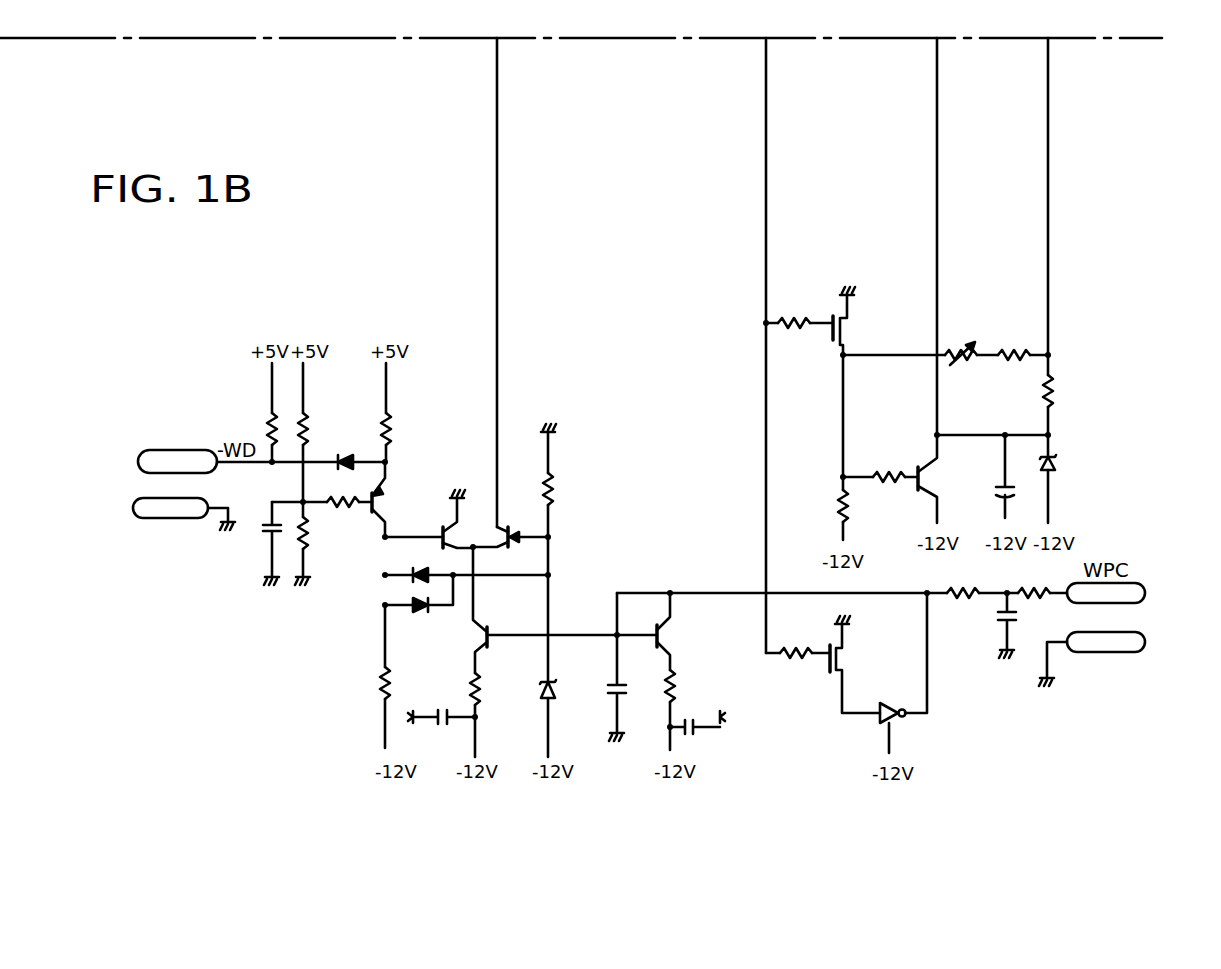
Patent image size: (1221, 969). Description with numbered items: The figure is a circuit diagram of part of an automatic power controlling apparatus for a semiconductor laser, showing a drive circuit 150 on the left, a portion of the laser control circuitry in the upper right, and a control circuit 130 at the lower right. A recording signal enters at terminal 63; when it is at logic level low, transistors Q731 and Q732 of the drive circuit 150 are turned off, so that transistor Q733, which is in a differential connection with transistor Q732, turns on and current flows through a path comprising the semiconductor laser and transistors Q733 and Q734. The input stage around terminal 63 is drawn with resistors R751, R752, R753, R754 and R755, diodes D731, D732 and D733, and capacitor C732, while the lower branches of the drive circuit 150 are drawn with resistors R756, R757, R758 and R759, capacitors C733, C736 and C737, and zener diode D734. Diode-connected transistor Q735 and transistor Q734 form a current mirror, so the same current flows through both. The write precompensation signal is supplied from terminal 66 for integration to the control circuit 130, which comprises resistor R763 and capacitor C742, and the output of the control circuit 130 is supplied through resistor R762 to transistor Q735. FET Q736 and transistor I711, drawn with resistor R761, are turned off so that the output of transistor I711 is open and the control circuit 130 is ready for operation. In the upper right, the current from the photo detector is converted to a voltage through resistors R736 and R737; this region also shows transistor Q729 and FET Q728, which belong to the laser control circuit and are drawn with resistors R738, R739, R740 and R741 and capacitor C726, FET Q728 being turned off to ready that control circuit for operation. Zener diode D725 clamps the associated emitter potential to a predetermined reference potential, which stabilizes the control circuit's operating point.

The terminal 63 is at (172, 450).
The terminal 66 is at (1145, 593).
The control circuit 130 is at (1018, 672).
The drive circuit 150 is at (507, 740).
The resistor R751 is at (252, 412).
The resistor R752 is at (329, 434).
The resistor R753 is at (414, 412).
The resistor R754 is at (323, 516).
The resistor R755 is at (333, 543).
The resistor R756 is at (351, 676).
The resistor R757 is at (442, 703).
The resistor R758 is at (529, 553).
The resistor R759 is at (700, 710).
The resistor R761 is at (798, 642).
The resistor R762 is at (968, 579).
The resistor R763 is at (1037, 579).
The resistor R736 is at (1014, 343).
The resistor R737 is at (919, 369).
The resistor R738 is at (1077, 396).
The resistor R739 is at (798, 313).
The resistor R740 is at (819, 447).
The resistor R741 is at (880, 465).
The capacitor C732 is at (245, 543).
The capacitor C733 is at (441, 731).
The capacitor C736 is at (635, 667).
The capacitor C737 is at (702, 736).
The capacitor C742 is at (1036, 625).
The capacitor C726 is at (991, 480).
The diode D731 is at (341, 474).
The diode D732 is at (465, 565).
The diode D733 is at (417, 608).
The zener diode D734 is at (527, 709).
The zener diode D725 is at (1077, 479).
The transistor Q731 is at (402, 499).
The transistor Q732 is at (429, 520).
The transistor Q733 is at (512, 551).
The transistor Q734 is at (545, 610).
The diode-connected transistor Q735 is at (693, 630).
The FET Q736 is at (867, 664).
The FET Q728 is at (869, 322).
The transistor Q729 is at (948, 479).
The transistor I711 is at (909, 671).